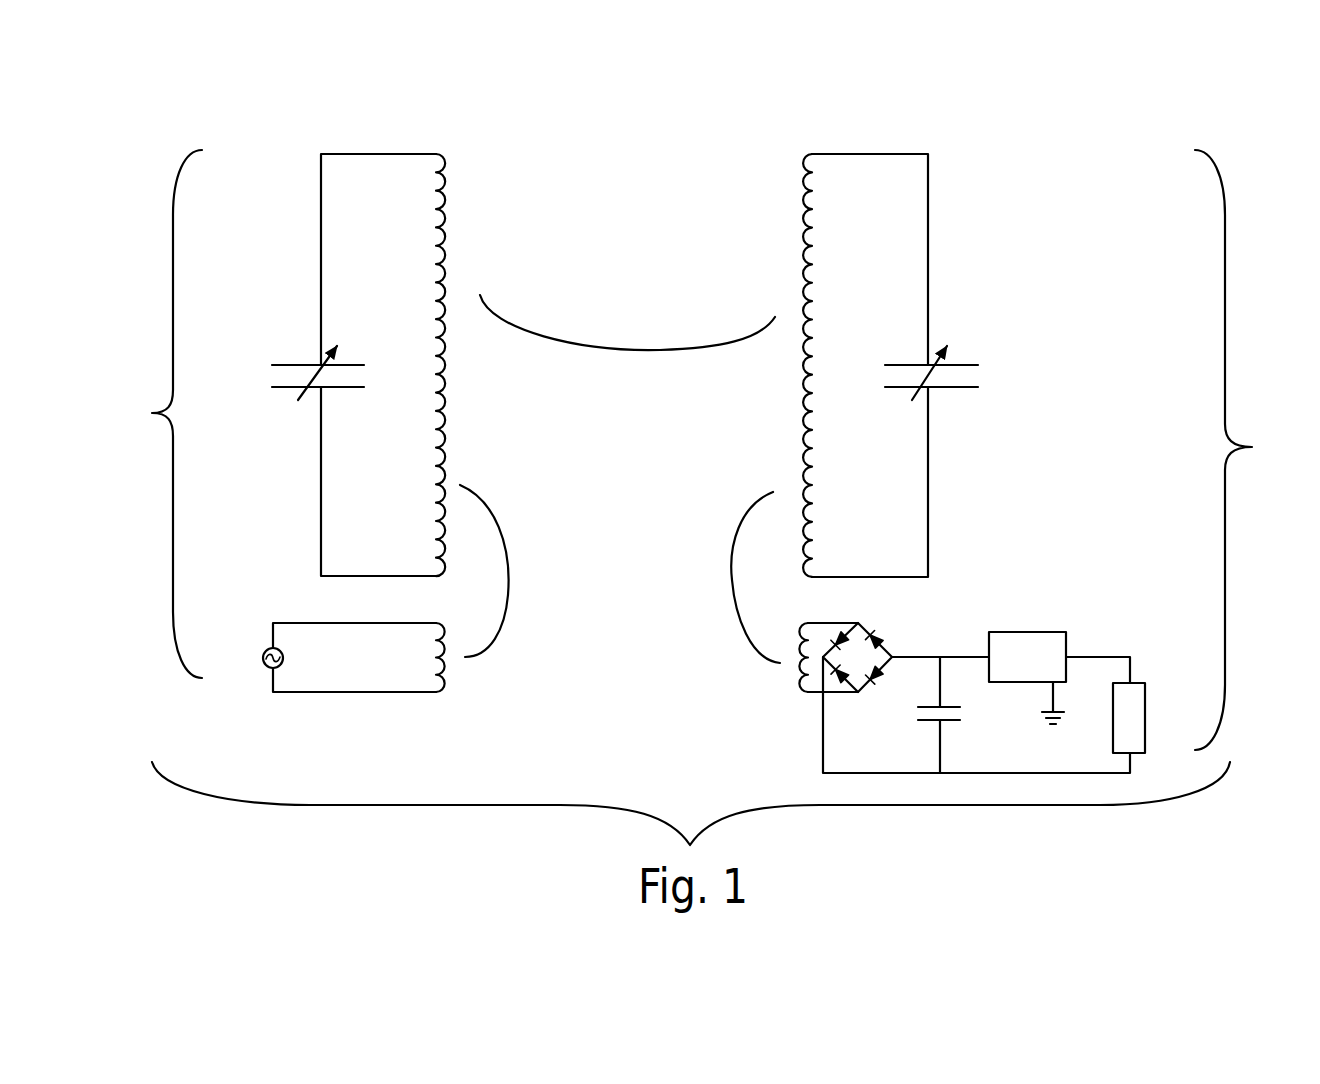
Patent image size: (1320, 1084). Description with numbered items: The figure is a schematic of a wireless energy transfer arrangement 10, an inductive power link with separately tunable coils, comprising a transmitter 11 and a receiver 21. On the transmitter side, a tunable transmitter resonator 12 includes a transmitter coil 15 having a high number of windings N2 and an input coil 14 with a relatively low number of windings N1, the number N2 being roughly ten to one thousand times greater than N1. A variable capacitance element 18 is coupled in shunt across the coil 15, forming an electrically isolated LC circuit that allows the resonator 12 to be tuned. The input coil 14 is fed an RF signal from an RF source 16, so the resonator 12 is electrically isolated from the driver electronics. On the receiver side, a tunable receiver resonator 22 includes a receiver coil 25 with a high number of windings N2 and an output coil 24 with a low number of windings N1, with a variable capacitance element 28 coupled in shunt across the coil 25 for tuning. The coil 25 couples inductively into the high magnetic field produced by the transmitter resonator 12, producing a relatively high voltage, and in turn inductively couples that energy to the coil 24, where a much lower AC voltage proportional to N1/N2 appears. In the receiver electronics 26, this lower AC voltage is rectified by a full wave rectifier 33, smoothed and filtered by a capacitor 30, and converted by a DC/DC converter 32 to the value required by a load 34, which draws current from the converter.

The wireless energy transfer arrangement 10 is at (308, 147).
The transmitter 11 is at (159, 414).
The tunable transmitter resonator 12 is at (450, 150).
The input coil 14 is at (351, 697).
The transmitter coil 15 is at (466, 436).
The RF source 16 is at (273, 623).
The variable capacitance element 18 is at (285, 396).
The receiver 21 is at (1246, 450).
The tunable receiver resonator 22 is at (950, 222).
The output coil 24 is at (775, 683).
The receiver coil 25 is at (627, 342).
The receiver electronics 26 is at (1090, 609).
The variable capacitance element 28 is at (975, 361).
The capacitor 30 is at (952, 722).
The DC/DC converter 32 is at (1016, 632).
The full wave rectifier 33 is at (877, 683).
The load 34 is at (1145, 718).